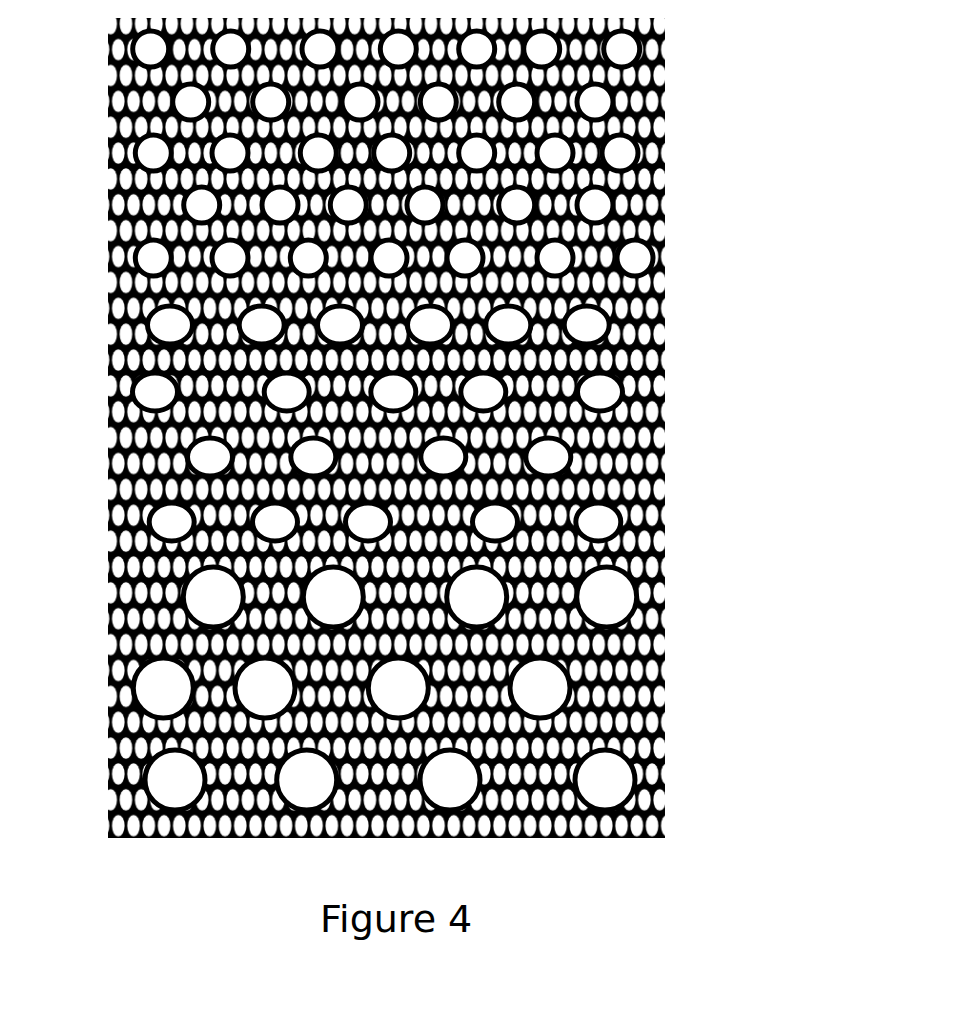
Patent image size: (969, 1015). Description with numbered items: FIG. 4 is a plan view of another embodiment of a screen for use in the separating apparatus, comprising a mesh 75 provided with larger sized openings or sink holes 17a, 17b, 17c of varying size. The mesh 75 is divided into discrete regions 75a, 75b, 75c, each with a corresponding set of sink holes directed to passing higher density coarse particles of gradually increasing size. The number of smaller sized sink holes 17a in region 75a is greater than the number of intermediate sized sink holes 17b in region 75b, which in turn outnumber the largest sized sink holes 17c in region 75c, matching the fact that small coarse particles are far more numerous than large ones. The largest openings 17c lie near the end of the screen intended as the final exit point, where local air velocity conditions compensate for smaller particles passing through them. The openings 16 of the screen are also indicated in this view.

The mesh 75 is at (665, 548).
The region 75a is at (400, 154).
The region 75b is at (406, 425).
The region 75c is at (409, 699).
The openings 16 is at (620, 310).
The smaller sized sink holes 17a is at (617, 97).
The intermediate sized sink holes 17b is at (552, 447).
The largest sized sink holes 17c is at (600, 788).